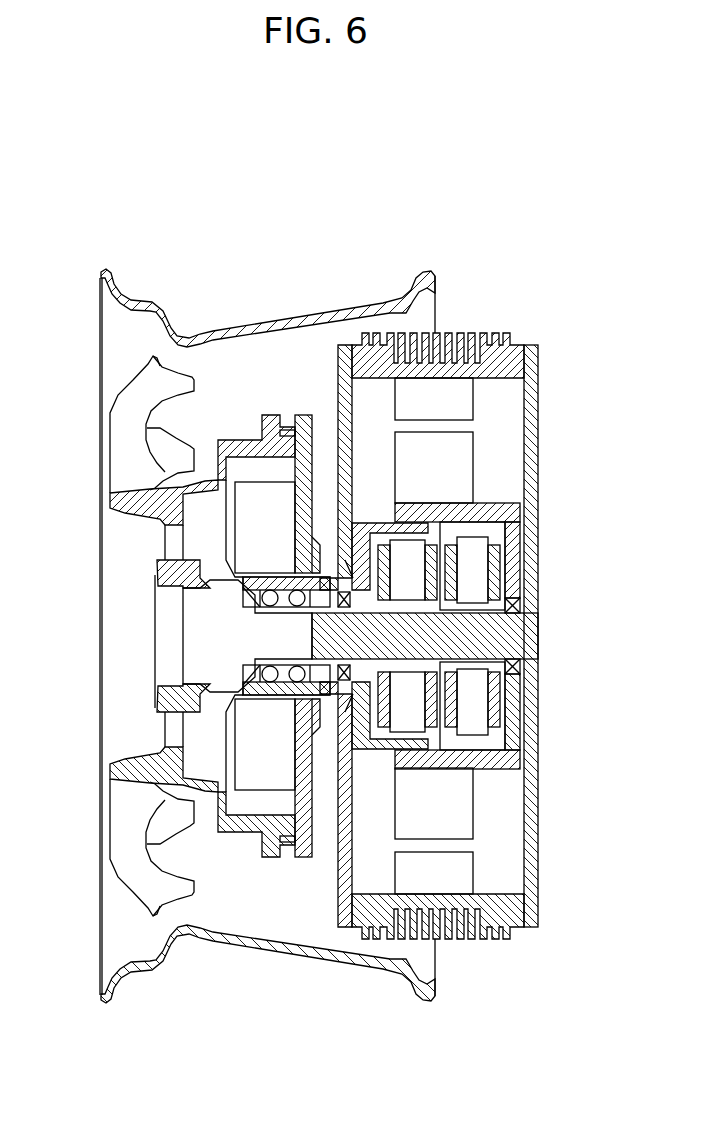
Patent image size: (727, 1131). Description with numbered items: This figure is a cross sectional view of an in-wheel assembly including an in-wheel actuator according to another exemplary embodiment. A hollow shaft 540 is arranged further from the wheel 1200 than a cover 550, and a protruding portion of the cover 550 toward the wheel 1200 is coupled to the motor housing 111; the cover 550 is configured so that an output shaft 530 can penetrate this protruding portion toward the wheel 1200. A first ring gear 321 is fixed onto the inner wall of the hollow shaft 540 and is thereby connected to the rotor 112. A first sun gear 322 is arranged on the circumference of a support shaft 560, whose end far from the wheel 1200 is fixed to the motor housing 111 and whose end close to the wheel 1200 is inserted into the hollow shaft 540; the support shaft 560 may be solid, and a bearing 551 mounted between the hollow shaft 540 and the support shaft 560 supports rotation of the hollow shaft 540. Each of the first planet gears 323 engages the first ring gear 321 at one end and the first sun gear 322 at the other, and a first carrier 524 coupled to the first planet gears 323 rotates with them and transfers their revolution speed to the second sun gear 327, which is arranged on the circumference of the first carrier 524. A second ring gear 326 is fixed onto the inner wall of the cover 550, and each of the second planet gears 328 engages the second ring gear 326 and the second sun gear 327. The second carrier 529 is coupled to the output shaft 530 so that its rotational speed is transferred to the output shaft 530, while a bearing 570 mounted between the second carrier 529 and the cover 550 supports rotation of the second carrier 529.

The wheel 1200 is at (185, 290).
The motor housing 111 is at (540, 362).
The rotor 112 is at (472, 438).
The cover 550 is at (365, 520).
The hollow shaft 540 is at (497, 494).
The first ring gear 321 is at (455, 547).
The first planet gears 323 is at (478, 550).
The bearing 570 is at (512, 603).
The first sun gear 322 is at (505, 592).
The support shaft 560 is at (525, 636).
The bearing 551 is at (520, 669).
The first carrier 524 is at (505, 688).
The second sun gear 327 is at (478, 720).
The second planet gears 328 is at (455, 725).
The second carrier 529 is at (430, 745).
The second ring gear 326 is at (500, 770).
The output shaft 530 is at (320, 632).